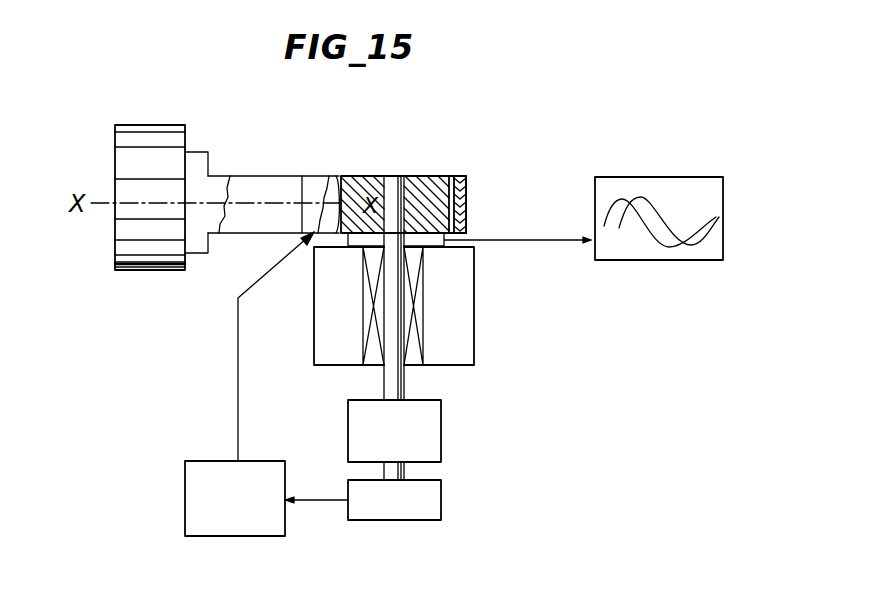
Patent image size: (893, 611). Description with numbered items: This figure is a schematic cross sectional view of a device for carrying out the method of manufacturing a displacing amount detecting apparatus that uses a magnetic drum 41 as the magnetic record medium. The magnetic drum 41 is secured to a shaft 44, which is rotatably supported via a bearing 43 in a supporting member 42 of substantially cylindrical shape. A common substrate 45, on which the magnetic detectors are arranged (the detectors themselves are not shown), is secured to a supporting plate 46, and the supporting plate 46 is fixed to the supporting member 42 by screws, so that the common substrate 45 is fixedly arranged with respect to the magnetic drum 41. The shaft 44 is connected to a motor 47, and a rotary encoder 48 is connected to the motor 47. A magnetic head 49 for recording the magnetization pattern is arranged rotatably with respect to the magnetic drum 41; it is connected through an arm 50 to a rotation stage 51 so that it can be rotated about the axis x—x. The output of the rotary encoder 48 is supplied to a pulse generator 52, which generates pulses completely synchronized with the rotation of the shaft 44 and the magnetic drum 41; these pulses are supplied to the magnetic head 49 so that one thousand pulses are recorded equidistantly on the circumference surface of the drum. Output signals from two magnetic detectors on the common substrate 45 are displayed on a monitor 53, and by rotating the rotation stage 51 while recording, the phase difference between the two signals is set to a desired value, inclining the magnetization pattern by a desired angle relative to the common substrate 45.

The magnetic drum 41 is at (430, 174).
The supporting member 42 is at (474, 305).
The bearing 43 is at (413, 346).
The shaft 44 is at (392, 174).
The common substrate 45 is at (458, 174).
The supporting plate 46 is at (467, 204).
The motor 47 is at (441, 432).
The rotary encoder 48 is at (441, 501).
The magnetic head 49 is at (322, 174).
The arm 50 is at (248, 174).
The rotation stage 51 is at (158, 123).
The pulse generator 52 is at (184, 497).
The monitor 53 is at (662, 175).